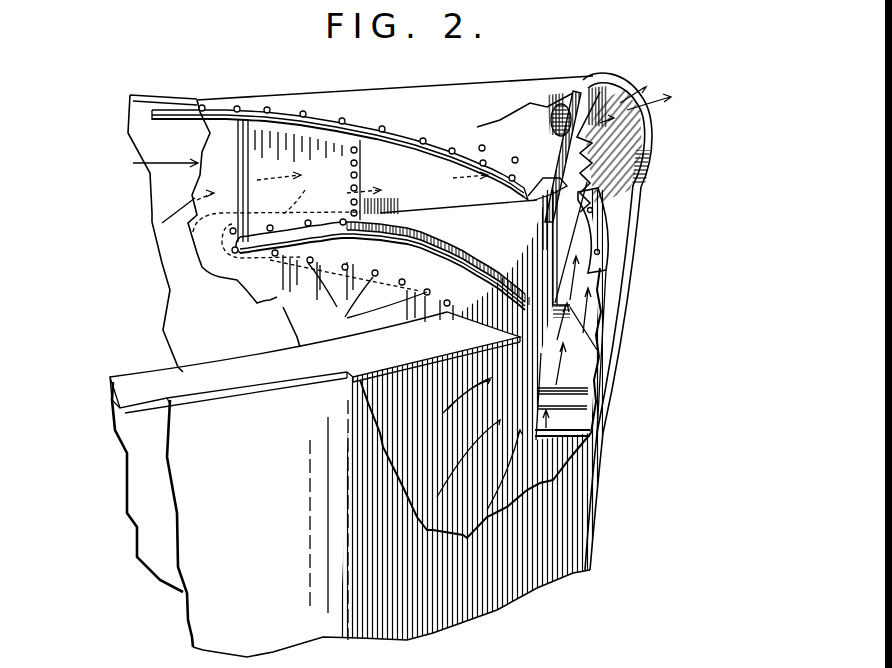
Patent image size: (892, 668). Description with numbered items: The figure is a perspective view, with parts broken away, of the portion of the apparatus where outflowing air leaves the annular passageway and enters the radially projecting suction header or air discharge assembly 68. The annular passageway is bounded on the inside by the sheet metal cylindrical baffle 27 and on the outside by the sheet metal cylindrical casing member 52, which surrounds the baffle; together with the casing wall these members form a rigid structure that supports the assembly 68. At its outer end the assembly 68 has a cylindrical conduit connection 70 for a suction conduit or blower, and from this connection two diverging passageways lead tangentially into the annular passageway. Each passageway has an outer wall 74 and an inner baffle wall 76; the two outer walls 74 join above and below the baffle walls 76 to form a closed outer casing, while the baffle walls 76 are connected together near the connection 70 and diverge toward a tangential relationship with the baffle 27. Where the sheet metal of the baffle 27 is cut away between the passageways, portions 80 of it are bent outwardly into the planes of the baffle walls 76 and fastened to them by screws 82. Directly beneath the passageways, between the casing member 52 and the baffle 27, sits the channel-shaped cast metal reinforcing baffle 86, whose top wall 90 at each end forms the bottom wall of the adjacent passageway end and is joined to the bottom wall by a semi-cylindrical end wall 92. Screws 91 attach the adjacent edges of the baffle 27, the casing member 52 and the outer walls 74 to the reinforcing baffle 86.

The cylindrical baffle 27 is at (277, 312).
The cylindrical casing member 52 is at (193, 618).
The air discharge assembly 68 is at (629, 291).
The cylindrical conduit connection 70 is at (657, 132).
The outer wall 74 is at (467, 97).
The inner baffle wall 76 is at (528, 127).
The bent-out sheet metal portions 80 is at (285, 140).
The screws 82 is at (366, 163).
The cast metal reinforcing baffle 86 is at (466, 271).
The top wall 90 is at (633, 360).
The screws 91 is at (321, 274).
The semi-cylindrical end wall 92 is at (570, 417).